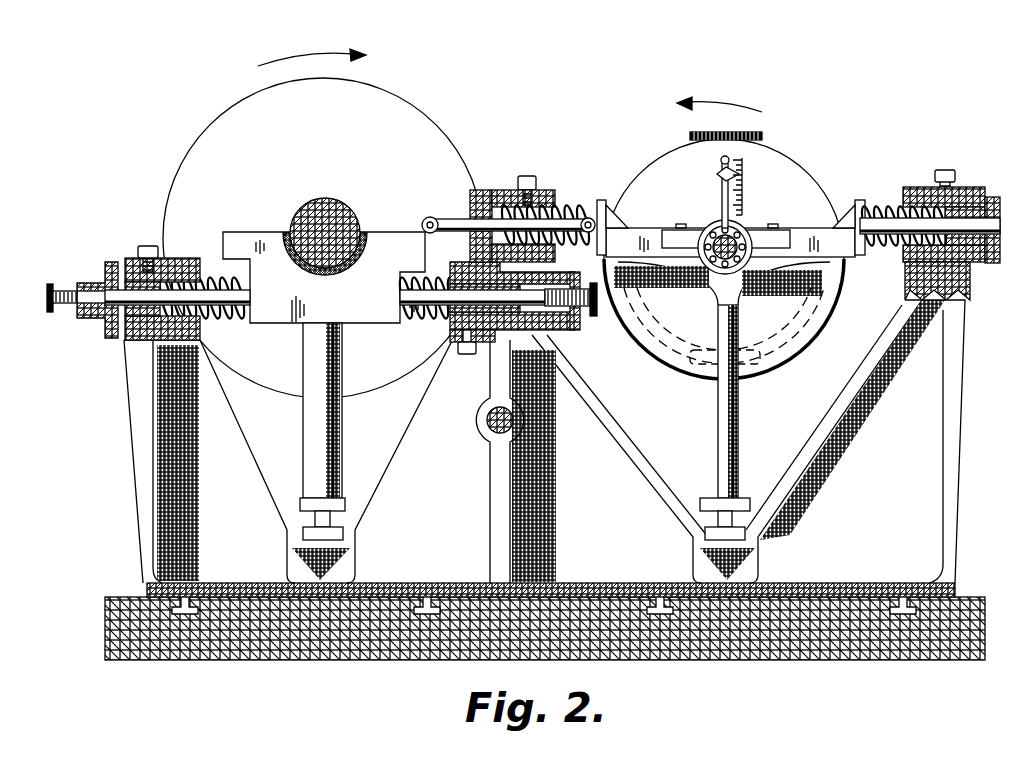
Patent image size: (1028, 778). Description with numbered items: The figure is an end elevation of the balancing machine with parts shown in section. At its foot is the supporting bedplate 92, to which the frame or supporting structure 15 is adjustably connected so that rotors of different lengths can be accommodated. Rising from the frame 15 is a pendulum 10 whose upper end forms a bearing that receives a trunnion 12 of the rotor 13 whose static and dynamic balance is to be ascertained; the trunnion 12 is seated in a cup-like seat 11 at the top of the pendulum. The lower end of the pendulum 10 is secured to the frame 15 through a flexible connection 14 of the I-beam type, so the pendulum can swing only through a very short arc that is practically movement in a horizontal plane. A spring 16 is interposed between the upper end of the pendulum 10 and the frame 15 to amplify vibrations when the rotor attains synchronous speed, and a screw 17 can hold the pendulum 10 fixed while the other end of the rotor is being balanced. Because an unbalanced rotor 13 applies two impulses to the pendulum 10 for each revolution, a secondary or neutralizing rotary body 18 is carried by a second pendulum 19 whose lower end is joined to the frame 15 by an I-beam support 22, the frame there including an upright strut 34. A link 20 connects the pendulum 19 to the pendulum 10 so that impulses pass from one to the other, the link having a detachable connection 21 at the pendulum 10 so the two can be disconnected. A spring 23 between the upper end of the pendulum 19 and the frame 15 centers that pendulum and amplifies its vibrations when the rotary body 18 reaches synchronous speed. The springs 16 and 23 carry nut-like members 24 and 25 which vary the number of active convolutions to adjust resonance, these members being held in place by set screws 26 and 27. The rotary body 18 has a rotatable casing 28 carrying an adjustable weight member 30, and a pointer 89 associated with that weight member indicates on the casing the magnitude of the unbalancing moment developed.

The pendulum 10 is at (340, 420).
The ball seat cup 11 is at (360, 240).
The trunnion 12 is at (334, 215).
The rotor 13 is at (440, 135).
The flexible connection 14 is at (330, 518).
The frame or supporting structure 15 is at (150, 470).
The spring 16 is at (222, 280).
The screw 17 is at (594, 312).
The secondary or neutralizing rotary body 18 is at (823, 164).
The movable support or pendulum 19 is at (742, 388).
The link 20 is at (598, 208).
The detachable connection 21 is at (432, 216).
The I-beam support 22 is at (748, 530).
The spring 23 is at (590, 205).
The nut-like member 24 is at (112, 262).
The nut-like member 25 is at (478, 195).
The set screw 26 is at (152, 247).
The set screw 27 is at (530, 176).
The rotatable housing or casing 28 is at (929, 243).
The adjustable weight member 30 is at (745, 195).
The strut with eye 34 is at (522, 420).
The pointer 89 is at (722, 174).
The supporting bedplate 92 is at (612, 644).